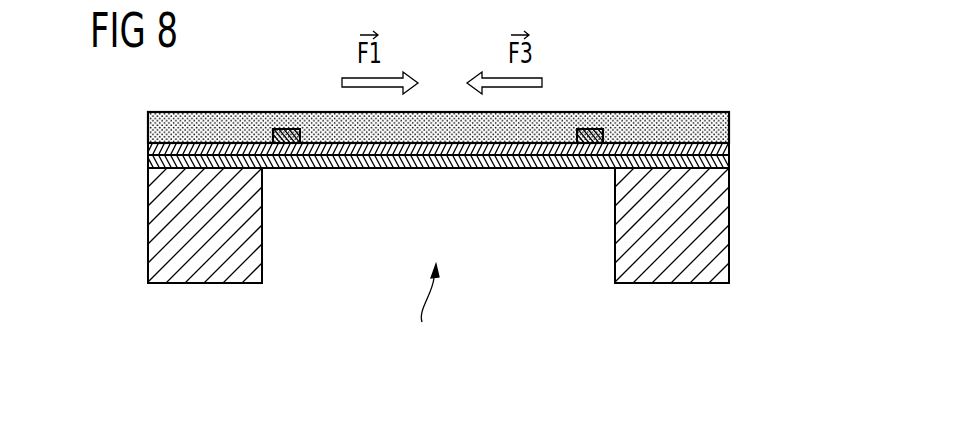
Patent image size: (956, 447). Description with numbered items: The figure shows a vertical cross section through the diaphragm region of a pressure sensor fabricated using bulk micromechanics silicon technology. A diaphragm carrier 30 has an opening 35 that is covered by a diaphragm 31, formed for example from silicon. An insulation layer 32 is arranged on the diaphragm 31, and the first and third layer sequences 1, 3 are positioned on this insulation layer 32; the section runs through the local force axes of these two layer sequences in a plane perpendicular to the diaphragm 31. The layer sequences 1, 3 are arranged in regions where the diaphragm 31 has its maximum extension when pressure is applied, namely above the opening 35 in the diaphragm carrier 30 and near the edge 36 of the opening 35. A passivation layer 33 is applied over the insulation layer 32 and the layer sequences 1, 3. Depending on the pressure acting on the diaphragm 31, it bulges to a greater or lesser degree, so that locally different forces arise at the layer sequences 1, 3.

The first layer sequence 1 is at (285, 129).
The third layer sequence 3 is at (593, 129).
The diaphragm carrier 30 is at (160, 217).
The diaphragm 31 is at (729, 168).
The insulation layer 32 is at (729, 143).
The passivation layer 33 is at (681, 120).
The opening 35 is at (424, 314).
The edge 36 is at (269, 213).